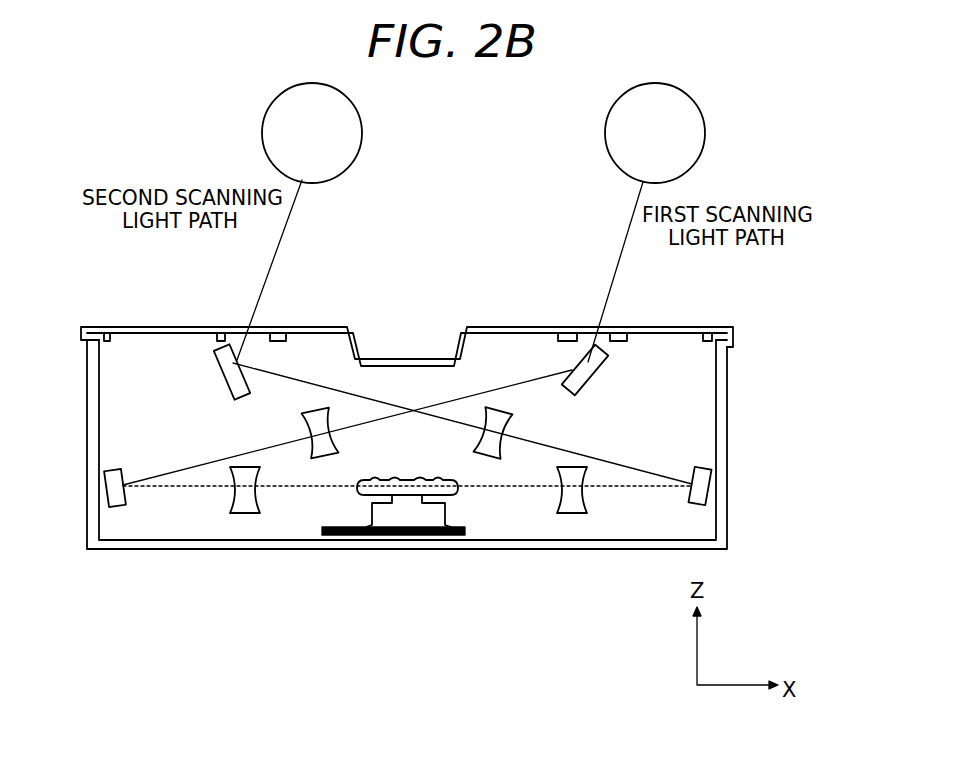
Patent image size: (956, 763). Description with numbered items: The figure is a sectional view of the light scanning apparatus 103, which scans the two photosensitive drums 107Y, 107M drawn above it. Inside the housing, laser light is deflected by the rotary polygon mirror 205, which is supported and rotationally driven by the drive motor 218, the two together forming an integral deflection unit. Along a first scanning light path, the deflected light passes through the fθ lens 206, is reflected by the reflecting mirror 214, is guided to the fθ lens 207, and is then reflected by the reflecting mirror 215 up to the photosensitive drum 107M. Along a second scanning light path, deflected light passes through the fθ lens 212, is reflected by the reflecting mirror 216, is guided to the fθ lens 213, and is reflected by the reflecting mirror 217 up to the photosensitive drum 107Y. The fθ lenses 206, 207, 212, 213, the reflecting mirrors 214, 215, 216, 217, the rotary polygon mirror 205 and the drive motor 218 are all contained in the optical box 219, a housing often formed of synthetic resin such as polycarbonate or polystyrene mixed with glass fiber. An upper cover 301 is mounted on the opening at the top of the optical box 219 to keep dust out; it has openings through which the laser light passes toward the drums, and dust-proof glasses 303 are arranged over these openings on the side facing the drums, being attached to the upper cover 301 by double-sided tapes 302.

The photosensitive drum 107Y is at (350, 125).
The photosensitive drum 107M is at (693, 125).
The light scanning apparatus 103 is at (413, 338).
The upper cover 301 is at (128, 333).
The double-sided tape 302 is at (222, 332).
The dust-proof glass 303 is at (242, 328).
The rotary polygon mirror 205 is at (403, 485).
The fθ lens 206 is at (238, 502).
The fθ lens 207 is at (318, 422).
The fθ lens 212 is at (572, 505).
The fθ lens 213 is at (496, 422).
The reflecting mirror 214 is at (112, 503).
The reflecting mirror 215 is at (600, 376).
The reflecting mirror 216 is at (707, 483).
The reflecting mirror 217 is at (227, 378).
The drive motor 218 is at (427, 515).
The optical box 219 is at (287, 552).